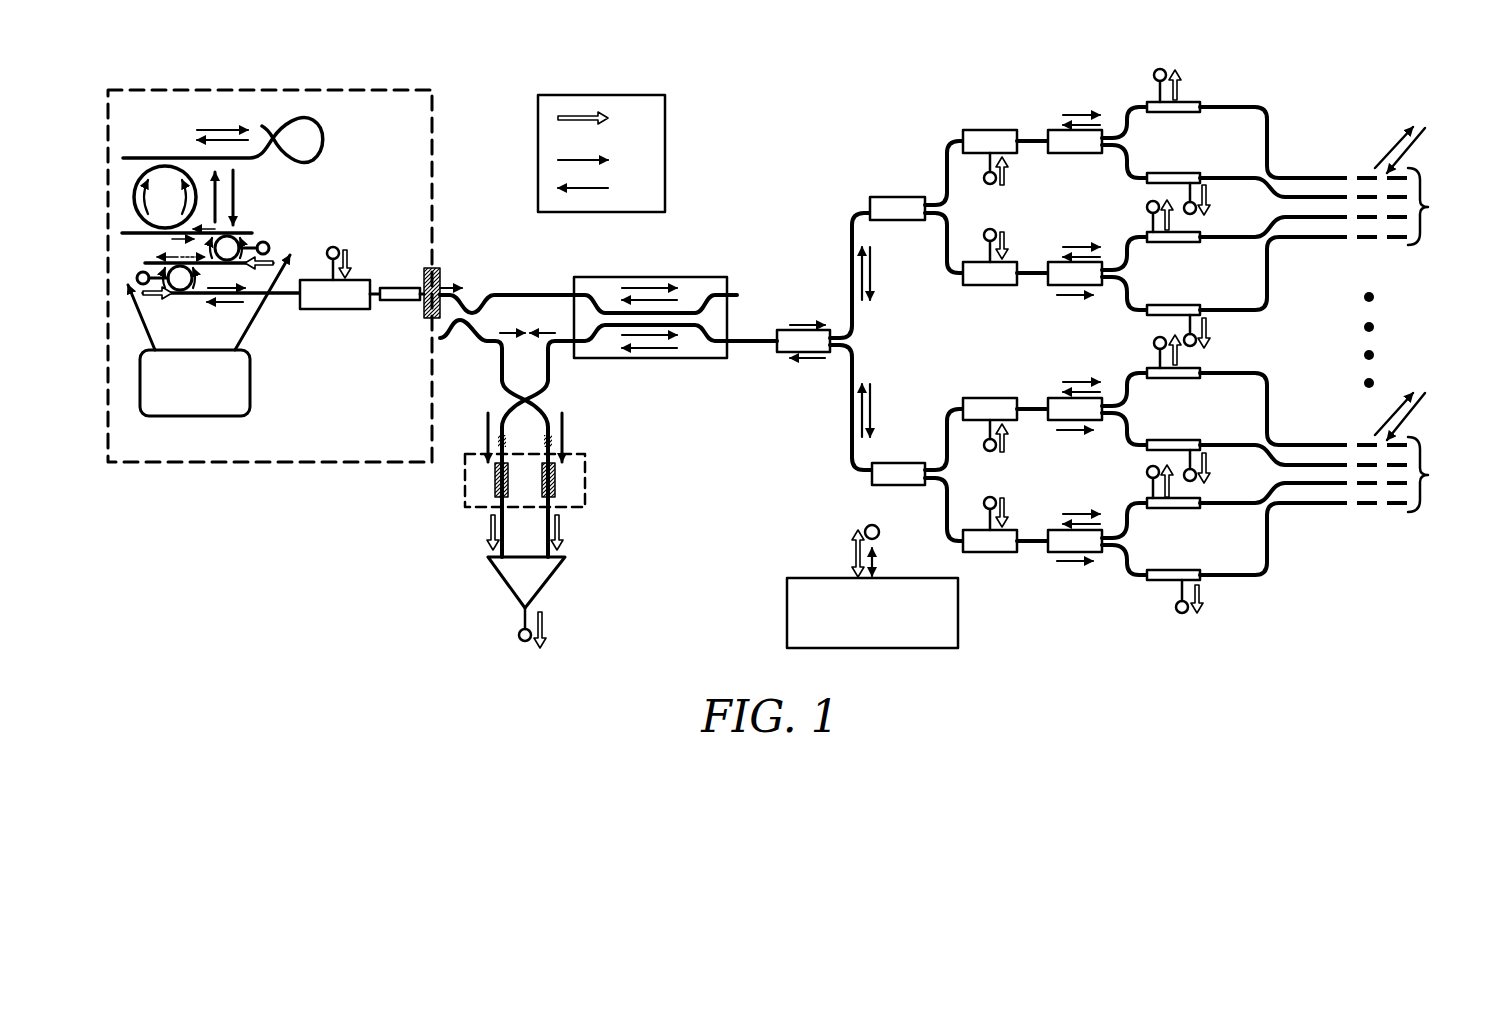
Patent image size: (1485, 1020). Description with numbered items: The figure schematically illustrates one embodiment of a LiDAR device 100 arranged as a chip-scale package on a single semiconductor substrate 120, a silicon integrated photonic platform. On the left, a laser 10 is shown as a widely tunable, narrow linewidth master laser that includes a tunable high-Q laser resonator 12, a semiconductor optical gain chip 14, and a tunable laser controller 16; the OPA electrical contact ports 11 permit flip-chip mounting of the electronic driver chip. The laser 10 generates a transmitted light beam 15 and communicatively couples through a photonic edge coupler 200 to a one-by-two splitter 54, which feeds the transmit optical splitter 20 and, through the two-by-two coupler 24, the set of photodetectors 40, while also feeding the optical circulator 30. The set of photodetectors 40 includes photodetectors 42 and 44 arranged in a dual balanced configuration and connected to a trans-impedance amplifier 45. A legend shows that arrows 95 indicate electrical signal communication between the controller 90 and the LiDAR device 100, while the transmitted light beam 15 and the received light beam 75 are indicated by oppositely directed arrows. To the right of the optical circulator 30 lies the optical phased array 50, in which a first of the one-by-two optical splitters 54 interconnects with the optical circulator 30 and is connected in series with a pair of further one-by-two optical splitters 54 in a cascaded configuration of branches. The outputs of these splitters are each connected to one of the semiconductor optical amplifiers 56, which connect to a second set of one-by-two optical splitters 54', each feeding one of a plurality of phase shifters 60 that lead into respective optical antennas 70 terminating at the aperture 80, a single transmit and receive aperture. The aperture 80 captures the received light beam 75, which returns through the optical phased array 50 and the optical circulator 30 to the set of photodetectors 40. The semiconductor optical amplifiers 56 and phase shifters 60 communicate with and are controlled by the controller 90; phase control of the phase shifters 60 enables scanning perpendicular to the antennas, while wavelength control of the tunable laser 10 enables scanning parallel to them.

The LiDAR device 100 is at (745, 78).
The OPA electrical contact ports 11 is at (368, 88).
The laser 10 is at (385, 122).
The tunable high-Q laser resonator 12 is at (225, 199).
The semiconductor optical gain chip 14 is at (337, 310).
The tunable laser controller 16 is at (182, 395).
The photonic edge coupler 200 is at (438, 270).
The 1×2 optical splitter 54 is at (711, 338).
The transmit optical splitter 20 is at (514, 363).
The 2×2 coupler 24 is at (535, 400).
The optical circulator 30 is at (715, 277).
The set of photodetectors 40 is at (585, 475).
The photodetector 42 is at (495, 480).
The photodetector 44 is at (555, 482).
The trans-impedance amplifier 45 is at (500, 577).
The arrows 95 is at (614, 130).
The transmitted light beam 15 is at (614, 172).
The received light beam 75 is at (614, 201).
The single semiconductor substrate 120 is at (867, 116).
The optical phased array 50 is at (1081, 93).
The semiconductor optical amplifier 56 is at (968, 130).
The second set of 1×2 optical splitters 54' is at (1090, 319).
The phase shifter 60 is at (1185, 102).
The optical antenna 70 is at (1365, 168).
The aperture 80 is at (1435, 219).
The controller 90 is at (859, 622).